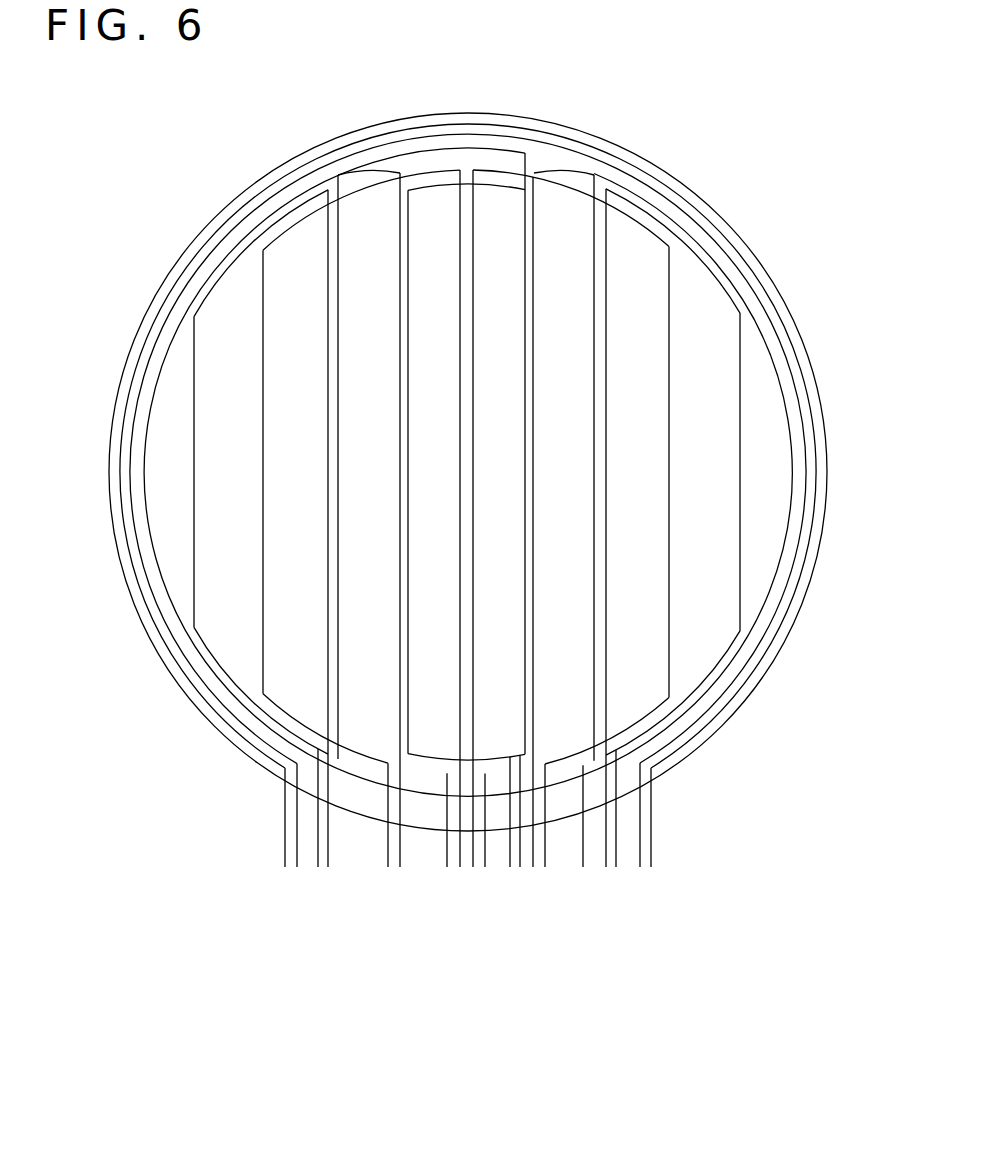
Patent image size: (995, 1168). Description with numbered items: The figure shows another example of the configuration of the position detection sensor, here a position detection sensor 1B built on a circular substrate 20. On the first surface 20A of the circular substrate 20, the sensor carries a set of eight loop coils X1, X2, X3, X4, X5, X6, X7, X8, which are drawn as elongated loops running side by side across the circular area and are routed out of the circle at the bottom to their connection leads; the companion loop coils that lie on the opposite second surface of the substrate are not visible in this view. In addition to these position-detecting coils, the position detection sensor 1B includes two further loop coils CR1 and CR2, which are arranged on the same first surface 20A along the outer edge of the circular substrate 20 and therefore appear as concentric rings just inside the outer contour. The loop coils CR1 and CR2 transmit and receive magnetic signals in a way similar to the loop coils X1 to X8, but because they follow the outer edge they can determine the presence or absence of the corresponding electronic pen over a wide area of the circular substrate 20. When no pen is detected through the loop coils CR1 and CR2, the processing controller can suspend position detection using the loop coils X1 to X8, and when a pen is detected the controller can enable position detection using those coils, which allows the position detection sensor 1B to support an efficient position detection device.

The position detection sensor 1B is at (762, 238).
The circular substrate 20 is at (456, 113).
The first surface 20A is at (578, 170).
The loop coil CR1 is at (642, 855).
The loop coil CR2 is at (652, 818).
The loop coil X1 is at (324, 868).
The loop coil X2 is at (393, 868).
The loop coil X3 is at (454, 868).
The loop coil X4 is at (479, 868).
The loop coil X5 is at (518, 868).
The loop coil X6 is at (541, 868).
The loop coil X7 is at (590, 868).
The loop coil X8 is at (611, 868).